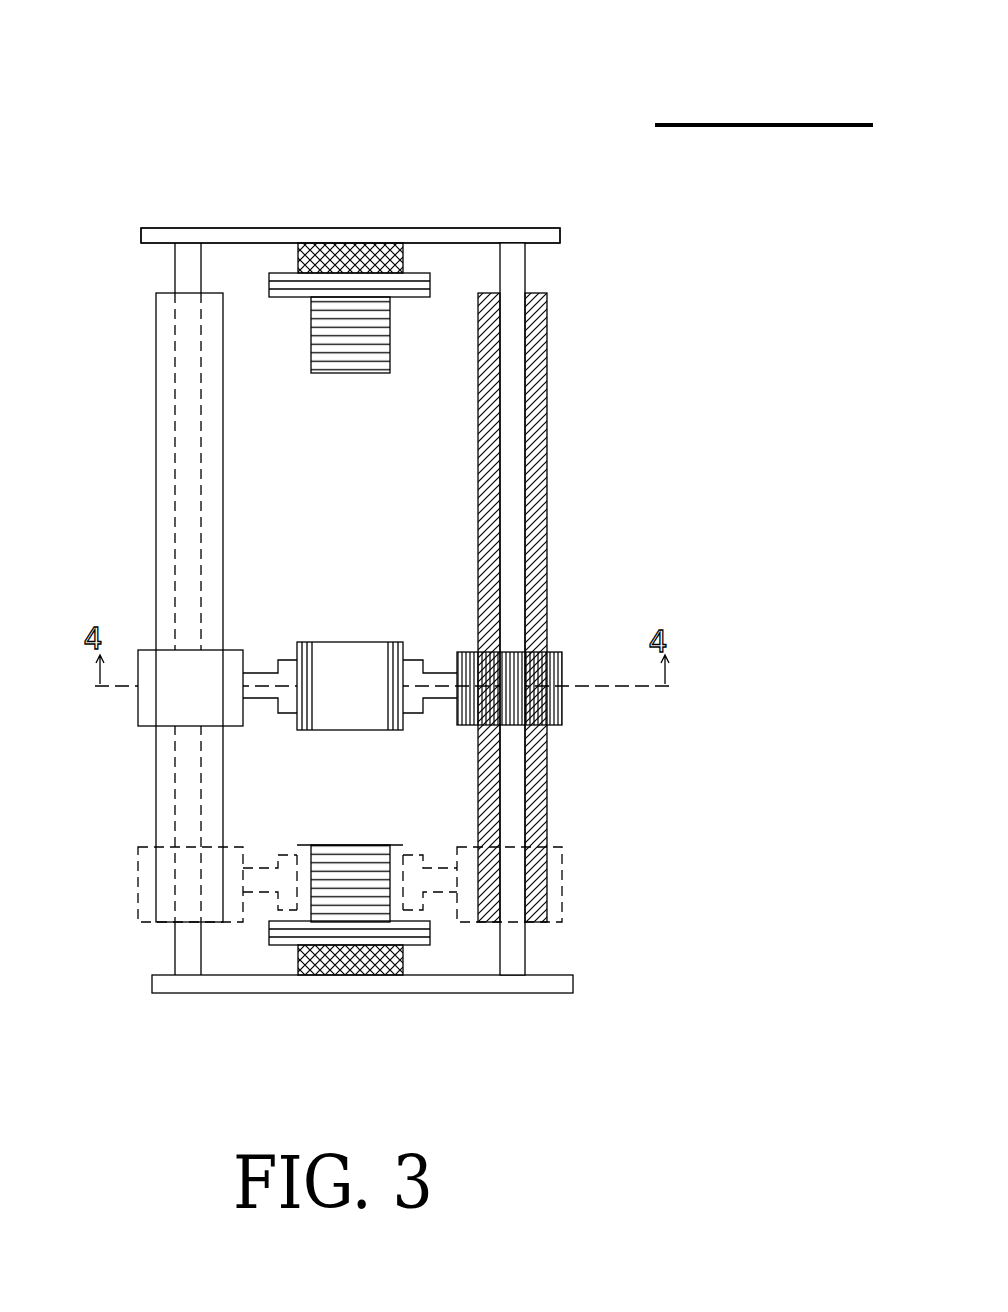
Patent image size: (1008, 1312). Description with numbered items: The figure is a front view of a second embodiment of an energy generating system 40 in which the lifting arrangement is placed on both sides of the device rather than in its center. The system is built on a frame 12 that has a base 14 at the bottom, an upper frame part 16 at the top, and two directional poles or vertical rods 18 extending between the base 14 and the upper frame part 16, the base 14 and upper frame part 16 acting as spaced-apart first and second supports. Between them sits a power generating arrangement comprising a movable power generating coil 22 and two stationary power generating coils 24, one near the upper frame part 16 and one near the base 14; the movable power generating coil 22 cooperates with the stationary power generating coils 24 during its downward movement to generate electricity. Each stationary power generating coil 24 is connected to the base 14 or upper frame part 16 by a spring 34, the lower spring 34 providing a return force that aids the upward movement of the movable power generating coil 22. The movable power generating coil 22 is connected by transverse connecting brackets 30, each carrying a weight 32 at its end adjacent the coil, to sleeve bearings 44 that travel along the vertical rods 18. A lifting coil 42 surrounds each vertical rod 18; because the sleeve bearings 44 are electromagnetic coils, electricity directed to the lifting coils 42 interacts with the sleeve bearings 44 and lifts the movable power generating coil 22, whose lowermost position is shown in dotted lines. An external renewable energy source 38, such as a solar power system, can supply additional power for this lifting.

The frame 12 is at (148, 230).
The base 14 is at (485, 983).
The upper frame part 16 is at (550, 233).
The vertical rods 18 is at (183, 260).
The movable power generating coil 22 is at (400, 642).
The stationary power generating coils 24 is at (388, 317).
The transverse connecting brackets 30 is at (252, 680).
The weight 32 is at (299, 660).
The springs 34 is at (360, 245).
The external renewable energy source 38 is at (750, 122).
The energy generating system 40 is at (343, 190).
The lifting coils 42 is at (157, 560).
The sleeve bearings 44 is at (148, 705).